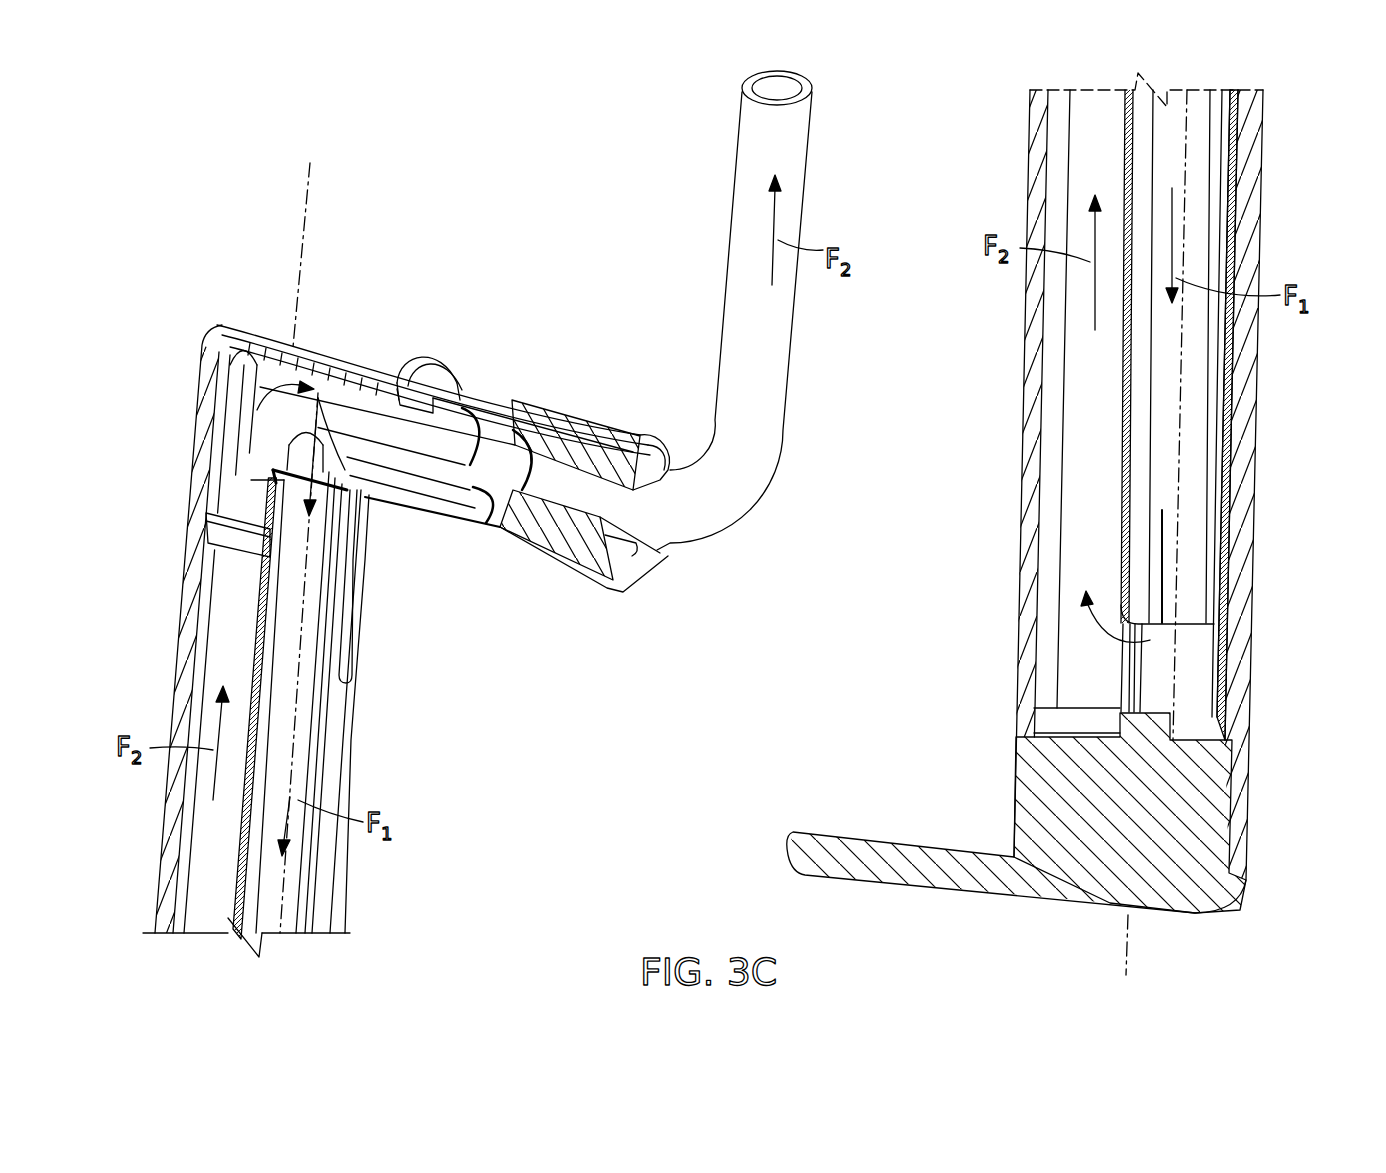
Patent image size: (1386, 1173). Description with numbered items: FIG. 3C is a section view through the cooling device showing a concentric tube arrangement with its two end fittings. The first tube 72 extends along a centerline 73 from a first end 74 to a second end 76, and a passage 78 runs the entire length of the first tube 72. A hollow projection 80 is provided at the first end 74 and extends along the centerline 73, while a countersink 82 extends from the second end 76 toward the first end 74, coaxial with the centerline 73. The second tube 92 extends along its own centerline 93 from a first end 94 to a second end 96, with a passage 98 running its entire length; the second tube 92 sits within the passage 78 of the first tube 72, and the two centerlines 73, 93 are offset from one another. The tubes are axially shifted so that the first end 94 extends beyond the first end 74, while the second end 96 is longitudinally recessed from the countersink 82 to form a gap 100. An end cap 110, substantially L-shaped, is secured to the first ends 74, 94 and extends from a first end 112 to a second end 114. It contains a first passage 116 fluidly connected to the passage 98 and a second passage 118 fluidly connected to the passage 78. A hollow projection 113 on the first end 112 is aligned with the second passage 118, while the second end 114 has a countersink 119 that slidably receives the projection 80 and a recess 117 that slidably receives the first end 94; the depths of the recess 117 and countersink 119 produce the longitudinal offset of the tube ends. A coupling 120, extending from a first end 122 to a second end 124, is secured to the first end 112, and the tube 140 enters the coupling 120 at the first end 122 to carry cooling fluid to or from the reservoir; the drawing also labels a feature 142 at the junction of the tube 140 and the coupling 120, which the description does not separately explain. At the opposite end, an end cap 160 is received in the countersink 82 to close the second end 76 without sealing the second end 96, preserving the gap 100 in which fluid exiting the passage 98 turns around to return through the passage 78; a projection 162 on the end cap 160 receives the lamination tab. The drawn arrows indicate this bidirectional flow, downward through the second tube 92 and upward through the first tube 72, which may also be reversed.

The first tube 72 is at (335, 877).
The centerline 73 is at (312, 210).
The first end 74 is at (368, 706).
The second end 76 is at (1312, 780).
The passage 78 is at (225, 672).
The hollow projection 80 is at (225, 580).
The countersink 82 is at (1032, 720).
The second tube 92 is at (245, 862).
The centerline 93 is at (300, 738).
The first end 94 is at (357, 585).
The second end 96 is at (1244, 590).
The passage 98 is at (296, 893).
The gap 100 is at (1202, 666).
The end cap 110 is at (378, 378).
The first end 112 is at (428, 372).
The hollow projection 113 is at (497, 545).
The second end 114 is at (168, 598).
The first passage 116 is at (416, 515).
The recess 117 is at (255, 497).
The second passage 118 is at (392, 405).
The countersink 119 is at (205, 525).
The coupling 120 is at (585, 440).
The first end 122 is at (610, 375).
The second end 124 is at (455, 340).
The tube 140 is at (778, 320).
The tube end 142 is at (658, 455).
The end cap 160 is at (1200, 828).
The projection 162 is at (845, 848).